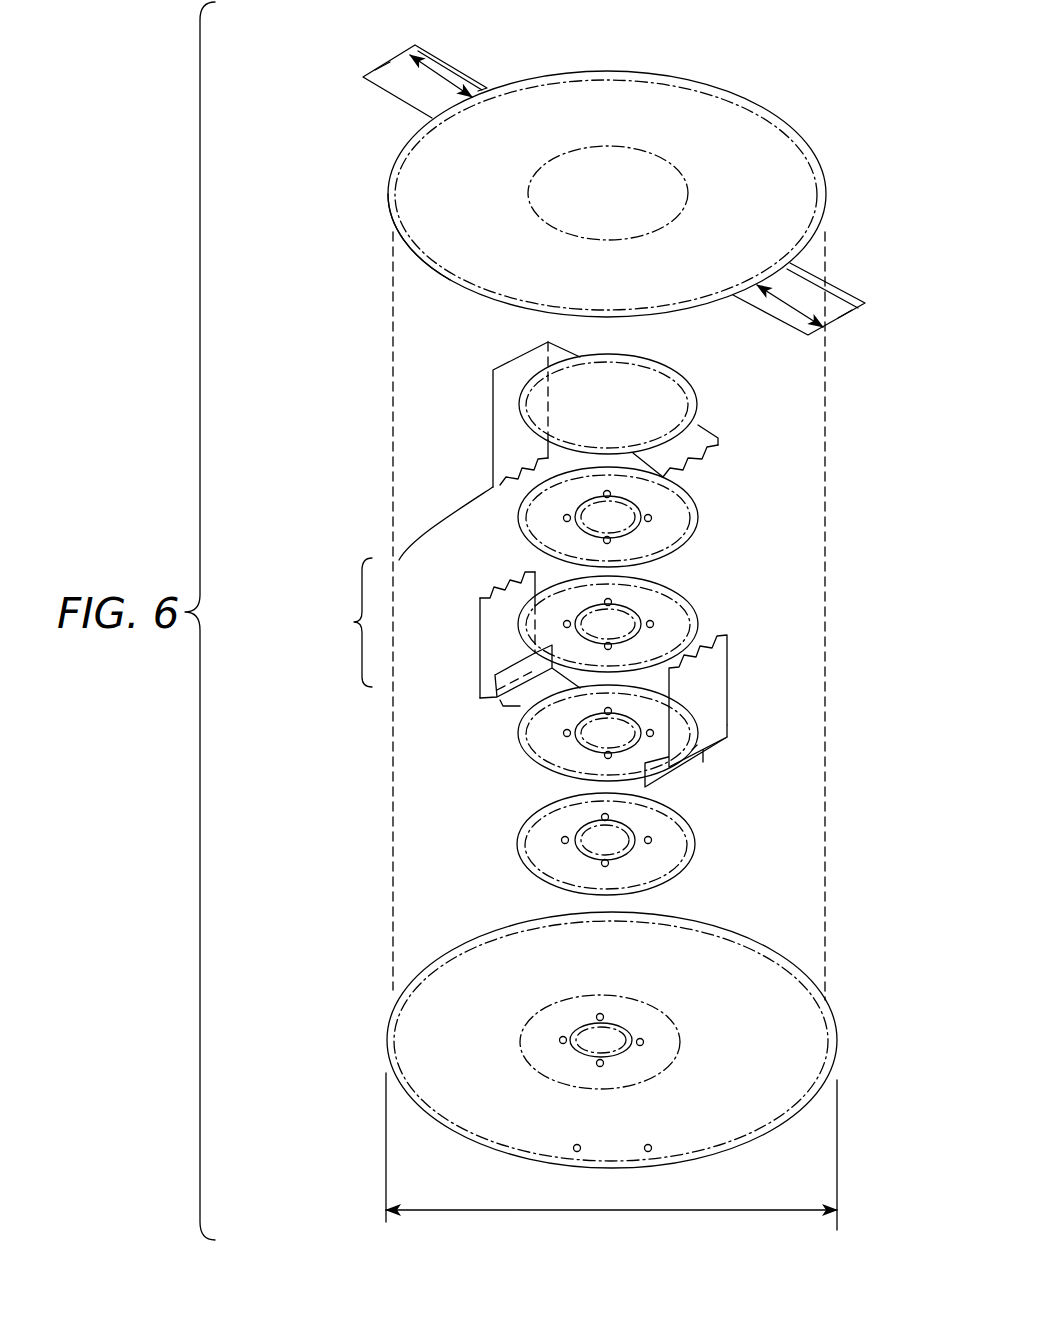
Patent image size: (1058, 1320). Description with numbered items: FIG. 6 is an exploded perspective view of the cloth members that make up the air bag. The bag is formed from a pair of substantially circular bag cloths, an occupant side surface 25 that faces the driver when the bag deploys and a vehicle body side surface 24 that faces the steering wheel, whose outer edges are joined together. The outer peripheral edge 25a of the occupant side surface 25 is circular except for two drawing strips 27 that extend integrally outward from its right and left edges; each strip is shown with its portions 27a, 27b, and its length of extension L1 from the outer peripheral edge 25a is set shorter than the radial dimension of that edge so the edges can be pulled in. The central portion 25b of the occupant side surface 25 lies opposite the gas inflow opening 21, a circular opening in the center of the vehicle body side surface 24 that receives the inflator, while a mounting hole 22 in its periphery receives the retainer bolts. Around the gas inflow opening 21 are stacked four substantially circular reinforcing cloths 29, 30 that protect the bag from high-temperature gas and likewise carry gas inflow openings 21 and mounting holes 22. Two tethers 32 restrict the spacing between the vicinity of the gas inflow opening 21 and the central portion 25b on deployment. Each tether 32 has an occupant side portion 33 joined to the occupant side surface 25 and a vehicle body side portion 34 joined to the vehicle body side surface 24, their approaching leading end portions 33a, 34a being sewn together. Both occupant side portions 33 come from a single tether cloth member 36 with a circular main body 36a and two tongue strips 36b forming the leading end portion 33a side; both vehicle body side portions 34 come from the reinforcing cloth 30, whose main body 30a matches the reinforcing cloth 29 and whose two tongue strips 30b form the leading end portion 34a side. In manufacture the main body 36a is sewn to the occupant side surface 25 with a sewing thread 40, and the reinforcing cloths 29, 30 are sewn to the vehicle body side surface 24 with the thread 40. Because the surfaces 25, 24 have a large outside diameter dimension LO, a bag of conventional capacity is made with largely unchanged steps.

The gas inflow opening 21 is at (641, 528).
The mounting hole 22 is at (652, 518).
The vehicle body side surface 24 is at (434, 940).
The occupant side surface 25 is at (747, 78).
The outer peripheral edge 25a is at (430, 267).
The central portion 25b is at (612, 165).
The drawing strip 27 is at (412, 95).
The tab base portion 27a is at (477, 88).
The tab end portion 27b is at (393, 67).
The reinforcing cloth 29 is at (690, 554).
The reinforcing cloth 30 is at (565, 766).
The main body 30a is at (543, 734).
The tongue strip 30b is at (517, 707).
The tether 32 is at (591, 622).
The occupant side portion 33 is at (772, 449).
The leading end portion 33a is at (489, 683).
The vehicle body side portion 34 is at (596, 691).
The leading end portion 34a is at (511, 668).
The tether cloth member 36 is at (608, 416).
The main body 36a is at (667, 395).
The tongue strip 36b is at (507, 400).
The sewing thread 40 is at (590, 72).
The length of extension L1 is at (425, 72).
The outside diameter dimension LO is at (611, 1151).